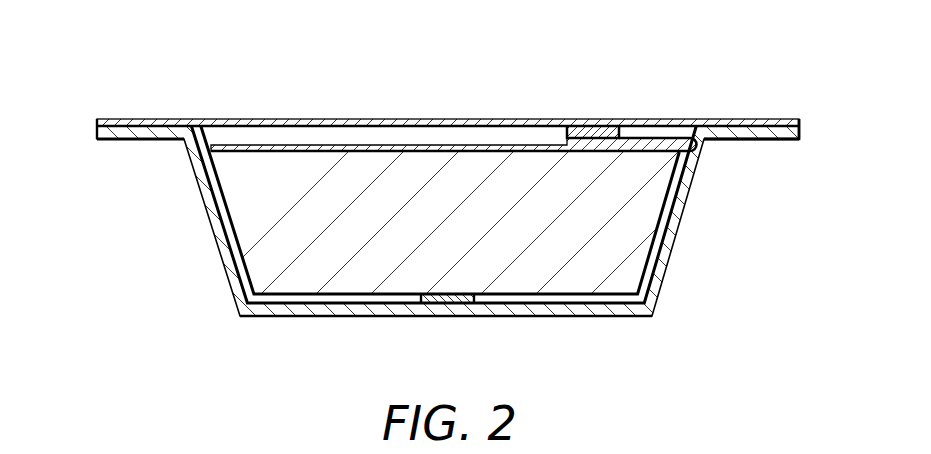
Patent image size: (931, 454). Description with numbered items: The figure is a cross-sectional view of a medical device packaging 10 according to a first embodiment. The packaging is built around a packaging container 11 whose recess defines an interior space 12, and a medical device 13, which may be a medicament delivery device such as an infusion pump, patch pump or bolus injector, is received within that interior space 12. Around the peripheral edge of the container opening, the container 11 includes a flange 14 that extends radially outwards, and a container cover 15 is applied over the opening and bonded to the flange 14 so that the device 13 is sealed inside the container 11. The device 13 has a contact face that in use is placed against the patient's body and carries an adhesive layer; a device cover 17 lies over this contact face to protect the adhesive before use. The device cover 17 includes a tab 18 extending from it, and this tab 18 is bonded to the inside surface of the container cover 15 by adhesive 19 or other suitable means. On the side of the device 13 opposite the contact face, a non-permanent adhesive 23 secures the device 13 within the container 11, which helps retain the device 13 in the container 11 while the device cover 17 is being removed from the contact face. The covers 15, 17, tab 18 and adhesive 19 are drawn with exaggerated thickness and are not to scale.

The medical device packaging 10 is at (465, 227).
The packaging container 11 is at (655, 317).
The interior space 12 is at (312, 297).
The medical device 13 is at (540, 267).
The flange 14 is at (776, 141).
The container cover 15 is at (445, 121).
The device cover 17 is at (320, 148).
The tab 18 is at (666, 139).
The adhesive 19 is at (592, 132).
The non-permanent adhesive 23 is at (448, 298).